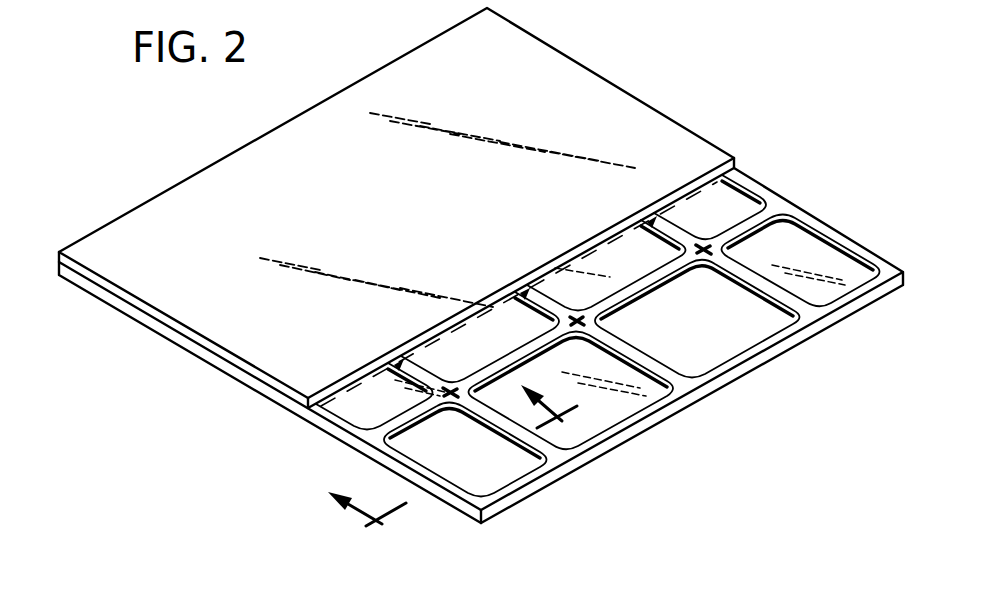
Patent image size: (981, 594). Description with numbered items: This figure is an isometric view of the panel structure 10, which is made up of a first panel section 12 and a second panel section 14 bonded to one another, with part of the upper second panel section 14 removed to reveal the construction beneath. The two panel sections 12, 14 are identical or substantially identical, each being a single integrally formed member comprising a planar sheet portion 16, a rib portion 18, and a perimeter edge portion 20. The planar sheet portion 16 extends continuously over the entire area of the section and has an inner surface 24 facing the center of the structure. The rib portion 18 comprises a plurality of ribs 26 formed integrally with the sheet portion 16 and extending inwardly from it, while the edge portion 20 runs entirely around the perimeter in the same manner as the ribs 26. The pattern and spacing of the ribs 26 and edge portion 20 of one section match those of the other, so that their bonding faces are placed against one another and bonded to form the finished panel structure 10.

The panel structure 10 is at (207, 131).
The first panel section 12 is at (655, 93).
The second panel section 14 is at (770, 167).
The planar sheet portion 16 is at (770, 322).
The rib portion 18 is at (778, 259).
The perimeter edge portion 20 is at (463, 502).
The inner surface 24 is at (725, 347).
The ribs 26 is at (620, 342).